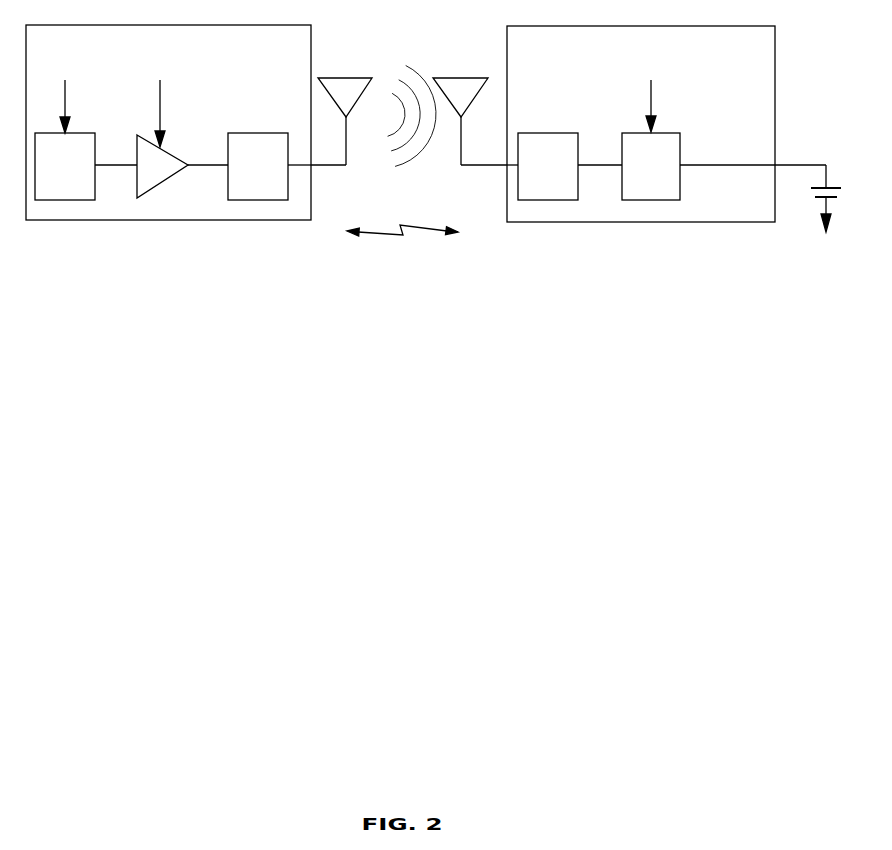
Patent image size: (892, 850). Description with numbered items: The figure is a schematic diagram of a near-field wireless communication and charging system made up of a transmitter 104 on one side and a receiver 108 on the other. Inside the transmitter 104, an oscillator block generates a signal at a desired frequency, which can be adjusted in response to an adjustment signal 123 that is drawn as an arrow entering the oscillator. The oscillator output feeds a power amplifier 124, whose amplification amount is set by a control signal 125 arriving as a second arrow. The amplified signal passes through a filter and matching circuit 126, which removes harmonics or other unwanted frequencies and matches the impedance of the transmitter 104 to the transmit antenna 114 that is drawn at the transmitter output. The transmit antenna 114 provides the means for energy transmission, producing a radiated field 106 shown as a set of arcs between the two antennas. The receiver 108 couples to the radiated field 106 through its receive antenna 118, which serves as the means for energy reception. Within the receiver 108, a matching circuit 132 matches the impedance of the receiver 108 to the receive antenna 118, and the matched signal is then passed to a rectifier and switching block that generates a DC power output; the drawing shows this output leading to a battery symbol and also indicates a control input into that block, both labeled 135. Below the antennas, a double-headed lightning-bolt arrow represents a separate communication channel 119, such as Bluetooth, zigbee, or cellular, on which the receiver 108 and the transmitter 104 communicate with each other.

The transmitter 104 is at (154, 55).
The transmit antenna 114 is at (51, 188).
The adjustment signal 123 is at (65, 97).
The control signal 125 is at (160, 97).
The power amplifier 124 is at (139, 175).
The filter and matching circuit 126 is at (244, 175).
The receive antenna 118 is at (473, 78).
The radiated field 106 is at (407, 160).
The communication channel 119 is at (406, 248).
The receiver 108 is at (626, 56).
The matching circuit 132 is at (534, 178).
The rectifier switching control / output to battery 135 is at (651, 97).